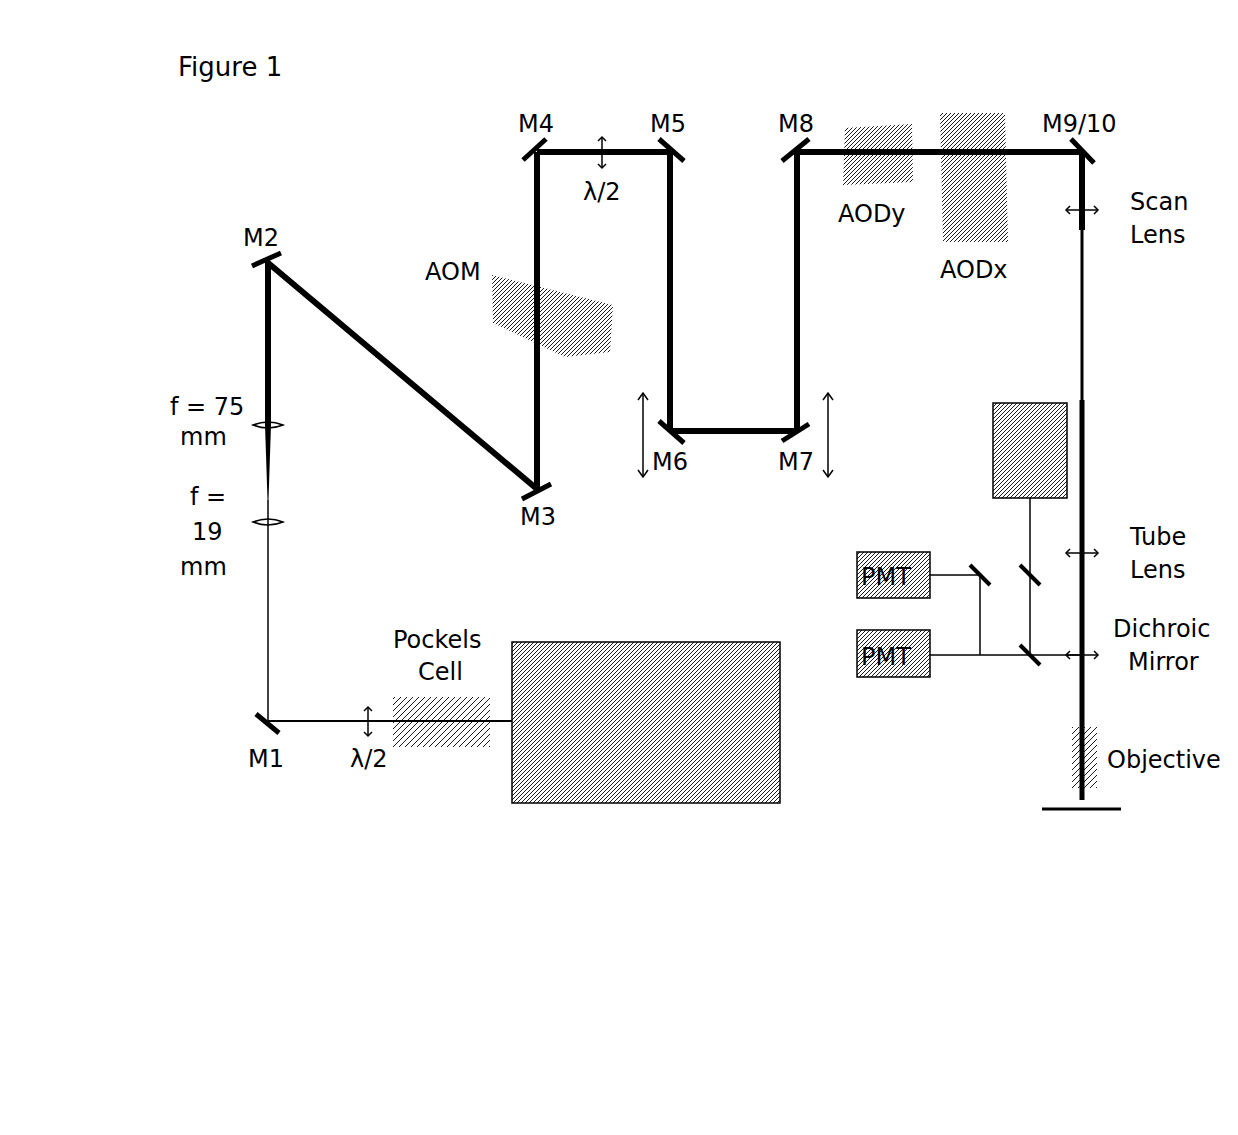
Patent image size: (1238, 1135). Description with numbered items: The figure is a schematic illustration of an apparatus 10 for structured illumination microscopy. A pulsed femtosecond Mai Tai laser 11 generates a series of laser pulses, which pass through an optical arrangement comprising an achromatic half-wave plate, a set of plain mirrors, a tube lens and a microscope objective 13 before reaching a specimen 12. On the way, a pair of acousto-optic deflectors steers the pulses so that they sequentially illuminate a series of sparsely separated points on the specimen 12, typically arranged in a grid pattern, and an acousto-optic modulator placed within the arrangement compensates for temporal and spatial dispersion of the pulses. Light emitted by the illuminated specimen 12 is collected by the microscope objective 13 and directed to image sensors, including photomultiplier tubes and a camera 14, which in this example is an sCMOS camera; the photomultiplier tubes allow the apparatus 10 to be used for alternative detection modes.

The apparatus 10 is at (273, 813).
The pulsed femtosecond Mai Tai laser 11 is at (646, 722).
The specimen 12 is at (1072, 756).
The microscope objective 13 is at (1065, 810).
The camera 14 is at (993, 470).